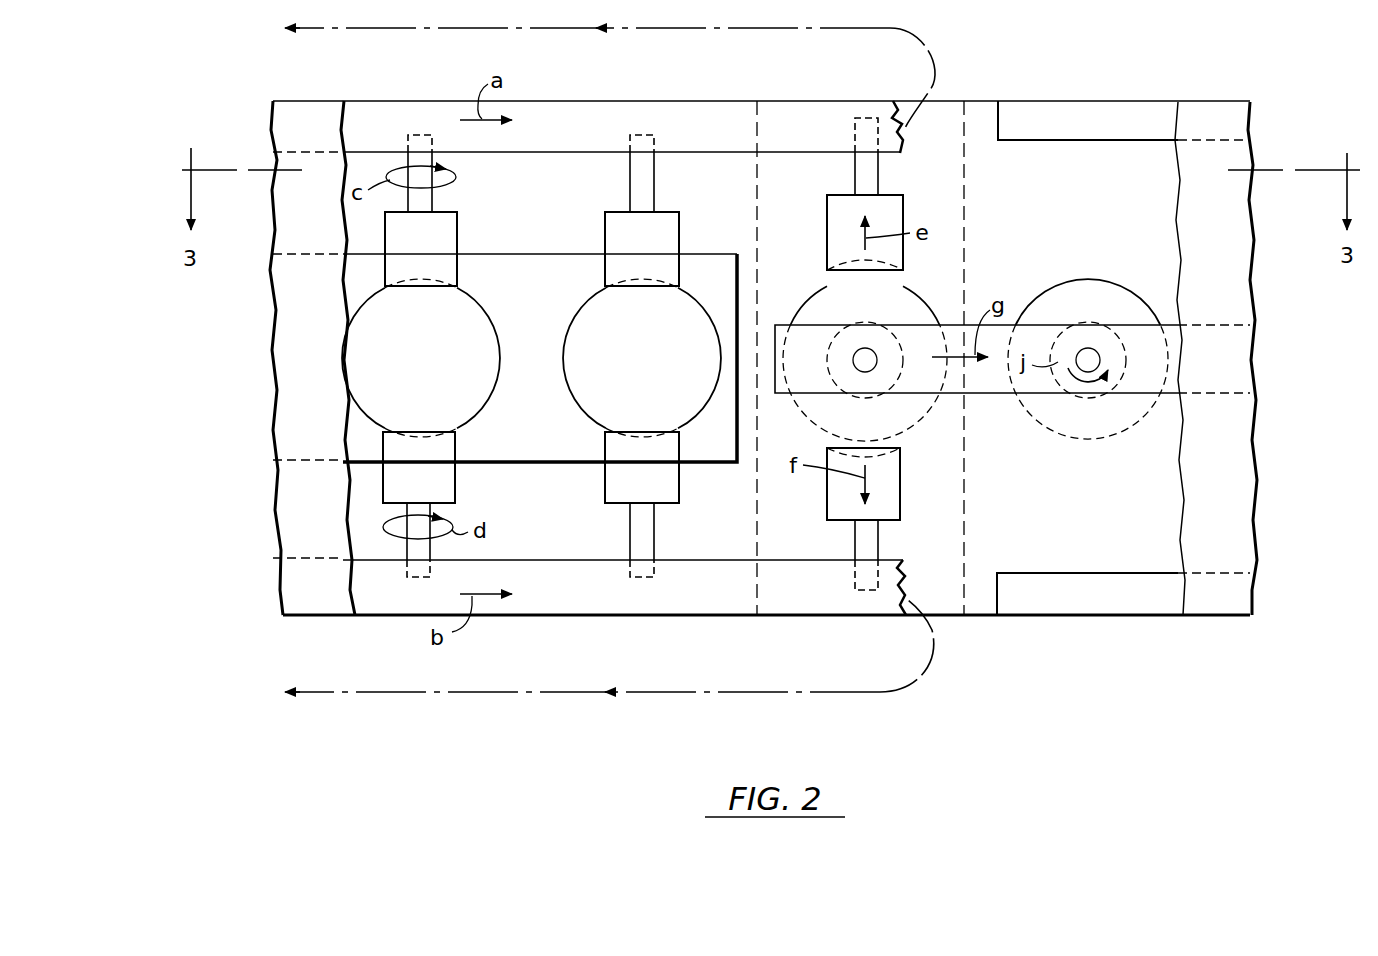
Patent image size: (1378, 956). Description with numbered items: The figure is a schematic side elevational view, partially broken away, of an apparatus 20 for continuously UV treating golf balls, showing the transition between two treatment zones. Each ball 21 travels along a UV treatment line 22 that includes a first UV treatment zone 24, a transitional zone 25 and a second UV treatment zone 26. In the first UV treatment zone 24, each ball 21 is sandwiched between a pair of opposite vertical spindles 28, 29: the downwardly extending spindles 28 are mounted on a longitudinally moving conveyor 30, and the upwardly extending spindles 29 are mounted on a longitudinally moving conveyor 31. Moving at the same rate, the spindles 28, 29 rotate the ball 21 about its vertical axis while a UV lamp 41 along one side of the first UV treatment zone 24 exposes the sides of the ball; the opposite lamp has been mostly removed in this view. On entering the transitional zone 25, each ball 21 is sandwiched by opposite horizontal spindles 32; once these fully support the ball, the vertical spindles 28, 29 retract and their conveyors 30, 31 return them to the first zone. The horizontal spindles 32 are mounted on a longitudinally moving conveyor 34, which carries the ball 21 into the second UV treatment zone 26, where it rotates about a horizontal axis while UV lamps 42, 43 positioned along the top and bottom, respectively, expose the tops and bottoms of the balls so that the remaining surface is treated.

The apparatus 20 is at (350, 79).
The ball 21 is at (424, 370).
The UV treatment line 22 is at (326, 619).
The first UV treatment zone 24 is at (533, 533).
The transitional zone 25 is at (776, 543).
The second UV treatment zone 26 is at (1054, 543).
The downwardly extending spindles 28 is at (458, 218).
The upwardly extending spindles 29 is at (456, 487).
The conveyor 30 is at (405, 107).
The conveyor 31 is at (555, 612).
The horizontal spindles 32 is at (867, 322).
The conveyor 34 is at (990, 396).
The UV lamp 41 is at (523, 255).
The UV lamp 42 is at (1113, 105).
The UV lamp 43 is at (1088, 615).